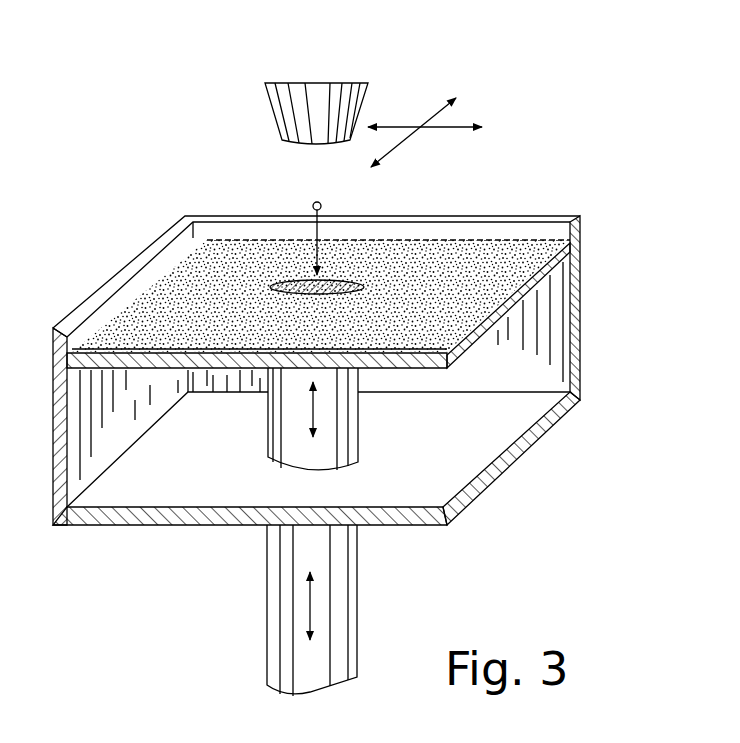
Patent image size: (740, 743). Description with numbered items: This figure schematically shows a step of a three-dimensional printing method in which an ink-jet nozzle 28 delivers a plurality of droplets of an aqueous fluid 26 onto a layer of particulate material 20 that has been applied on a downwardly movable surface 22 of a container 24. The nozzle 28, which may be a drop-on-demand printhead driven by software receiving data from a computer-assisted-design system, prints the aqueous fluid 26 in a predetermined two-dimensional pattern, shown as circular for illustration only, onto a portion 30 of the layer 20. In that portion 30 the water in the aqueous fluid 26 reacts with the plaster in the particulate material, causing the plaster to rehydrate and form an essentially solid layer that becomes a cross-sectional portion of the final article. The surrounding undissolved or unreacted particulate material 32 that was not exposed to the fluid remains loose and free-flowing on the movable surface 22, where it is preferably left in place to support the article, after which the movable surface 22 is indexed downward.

The layer of particulate material 20 is at (353, 354).
The downwardly movable surface 22 is at (486, 330).
The container 24 is at (582, 278).
The aqueous fluid 26 is at (321, 206).
The ink-jet nozzle 28 is at (360, 108).
The portion of the layer 30 is at (357, 290).
The undissolved or unreacted particulate material 32 is at (252, 275).